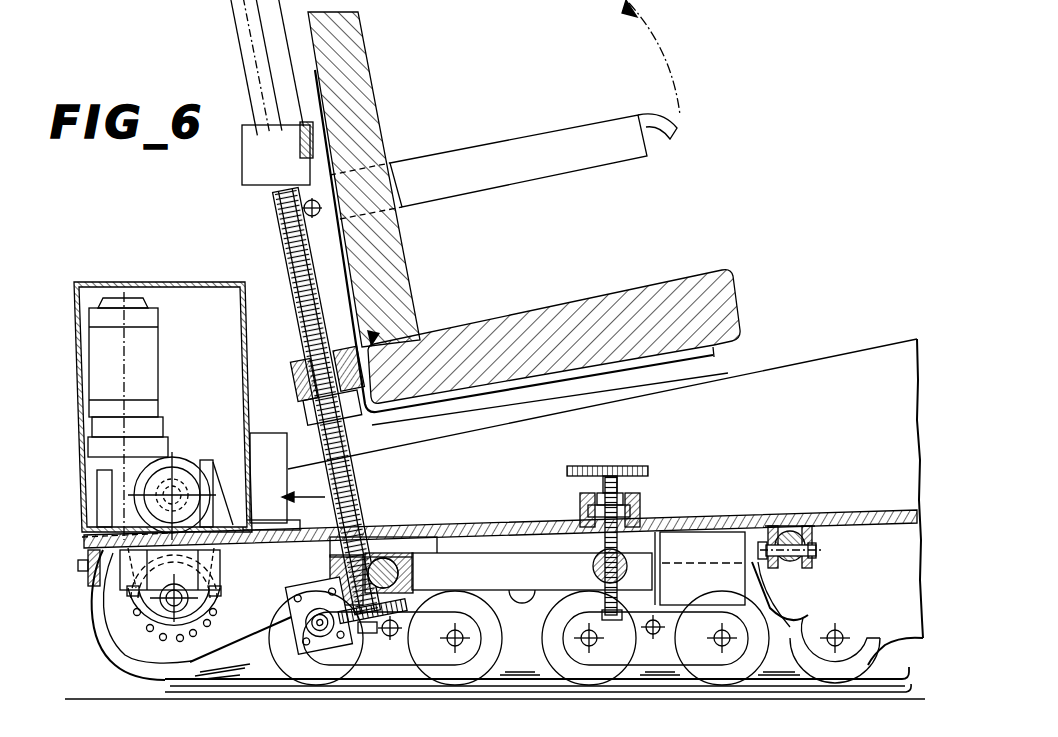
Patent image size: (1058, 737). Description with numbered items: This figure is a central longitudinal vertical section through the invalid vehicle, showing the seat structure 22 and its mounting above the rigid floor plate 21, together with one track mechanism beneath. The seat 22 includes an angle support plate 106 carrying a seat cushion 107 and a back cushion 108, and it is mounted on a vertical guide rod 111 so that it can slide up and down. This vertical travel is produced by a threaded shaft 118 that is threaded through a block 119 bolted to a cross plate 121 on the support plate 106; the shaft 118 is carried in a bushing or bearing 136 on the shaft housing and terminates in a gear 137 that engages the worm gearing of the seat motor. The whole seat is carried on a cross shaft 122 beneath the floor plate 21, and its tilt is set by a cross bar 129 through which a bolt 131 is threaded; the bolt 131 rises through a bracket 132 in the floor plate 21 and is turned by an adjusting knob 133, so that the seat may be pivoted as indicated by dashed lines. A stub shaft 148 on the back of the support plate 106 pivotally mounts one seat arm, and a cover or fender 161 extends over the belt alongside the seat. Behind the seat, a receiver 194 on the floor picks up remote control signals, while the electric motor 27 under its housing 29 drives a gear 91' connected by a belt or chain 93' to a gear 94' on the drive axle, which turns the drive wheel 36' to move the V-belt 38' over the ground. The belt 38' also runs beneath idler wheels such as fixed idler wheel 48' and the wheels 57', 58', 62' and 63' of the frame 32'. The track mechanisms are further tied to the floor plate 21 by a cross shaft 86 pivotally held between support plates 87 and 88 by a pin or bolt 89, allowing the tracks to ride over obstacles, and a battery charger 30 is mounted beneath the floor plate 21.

The vertical guide rod 111 is at (238, 38).
The seat structure 22 is at (457, 140).
The threaded shaft 118 is at (270, 212).
The stub shaft 148 is at (282, 240).
The housing 29 is at (150, 283).
The electric motor 27 is at (157, 366).
The back cushion 108 is at (402, 302).
The seat cushion 107 is at (738, 318).
The angle support plate 106 is at (689, 360).
The cross plate 121 is at (300, 365).
The block 119 is at (292, 383).
The gear 91' is at (165, 475).
The cover or fender 161 is at (866, 356).
The adjusting knob 133 is at (601, 466).
The receiver 194 is at (322, 496).
The cross shaft 122 is at (412, 545).
The floor plate 21 is at (498, 530).
The cross bar 129 is at (600, 553).
The bracket 132 is at (640, 498).
The bolt 131 is at (640, 512).
The battery charger 30 is at (703, 545).
The support plate 87 is at (770, 526).
The support plate 88 is at (812, 526).
The belt or chain 93' is at (108, 547).
The bushing or bearing 136 is at (330, 583).
The pin or bolt 89 is at (816, 553).
The cross shaft 86 is at (788, 563).
The drive wheel 36' is at (179, 615).
The base frame 32' is at (894, 622).
The gear 94' is at (149, 609).
The gear 137 is at (406, 614).
The V-belt 38' is at (520, 697).
The front wheel 63' is at (305, 659).
The track wheel 62' is at (402, 659).
The track wheel 58' is at (645, 659).
The track wheel 57' is at (722, 659).
The fixed idler wheel 48' is at (816, 645).